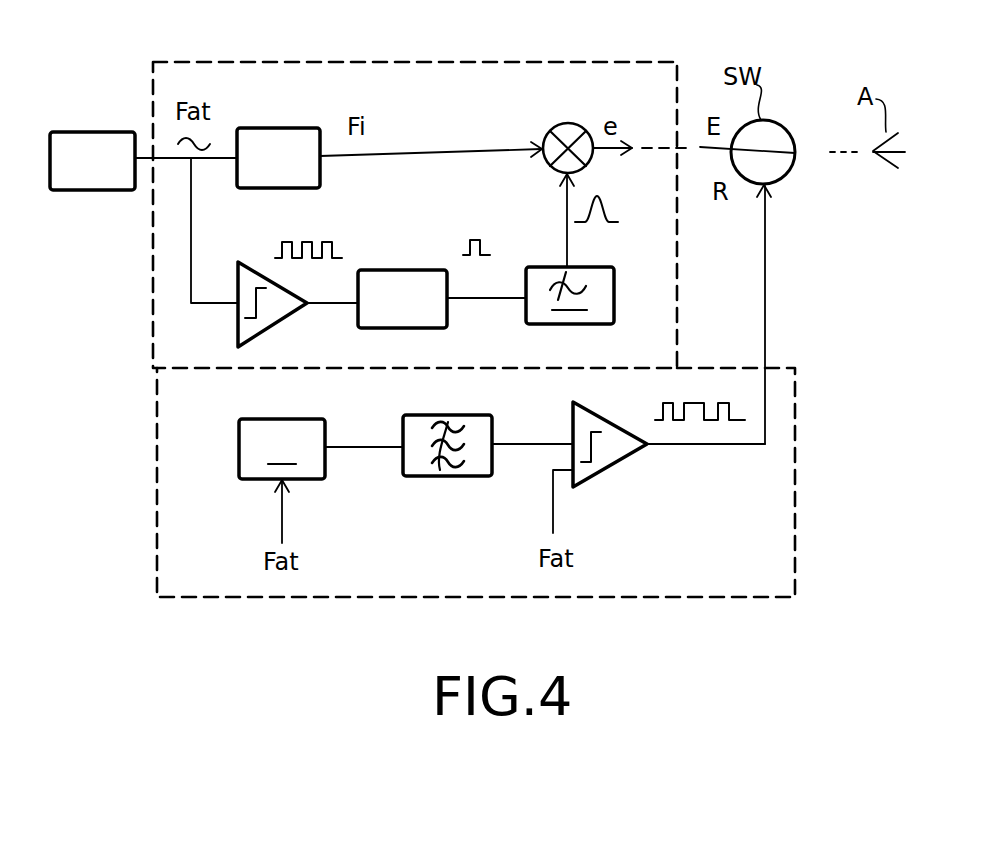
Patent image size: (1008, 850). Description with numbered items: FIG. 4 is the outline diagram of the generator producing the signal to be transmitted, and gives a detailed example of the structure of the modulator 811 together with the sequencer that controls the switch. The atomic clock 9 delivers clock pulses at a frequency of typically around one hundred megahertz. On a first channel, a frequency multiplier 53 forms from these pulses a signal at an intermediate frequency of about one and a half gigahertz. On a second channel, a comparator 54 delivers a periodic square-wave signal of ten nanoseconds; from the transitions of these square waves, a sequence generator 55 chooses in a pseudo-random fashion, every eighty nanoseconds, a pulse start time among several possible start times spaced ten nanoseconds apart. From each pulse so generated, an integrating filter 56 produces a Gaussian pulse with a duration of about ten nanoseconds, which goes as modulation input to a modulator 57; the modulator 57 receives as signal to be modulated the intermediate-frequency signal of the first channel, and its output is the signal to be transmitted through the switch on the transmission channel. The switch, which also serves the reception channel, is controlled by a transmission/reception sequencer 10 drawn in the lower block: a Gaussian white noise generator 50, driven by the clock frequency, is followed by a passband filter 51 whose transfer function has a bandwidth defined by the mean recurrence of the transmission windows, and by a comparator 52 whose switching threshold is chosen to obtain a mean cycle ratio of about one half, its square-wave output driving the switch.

The atomic clock 9 is at (92, 132).
The frequency multiplier 53 is at (267, 128).
The modulator 57 is at (560, 124).
The modulator 811 is at (590, 75).
The sequence generator 55 is at (410, 270).
The comparator 54 is at (283, 323).
The integrating filter 56 is at (614, 302).
The gaussian white noise generator 50 is at (282, 449).
The passband filter 51 is at (445, 476).
The comparator 52 is at (605, 470).
The transmission/reception sequencer 10 is at (780, 526).